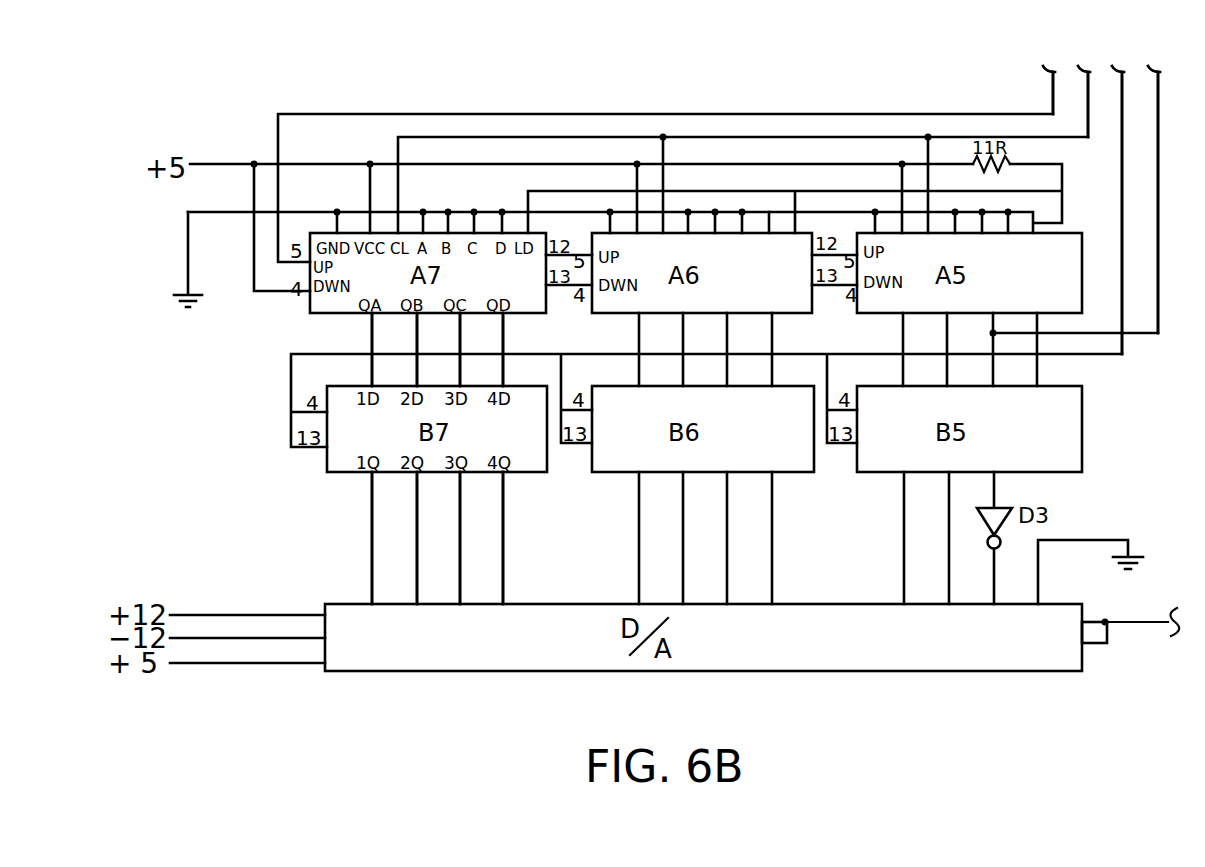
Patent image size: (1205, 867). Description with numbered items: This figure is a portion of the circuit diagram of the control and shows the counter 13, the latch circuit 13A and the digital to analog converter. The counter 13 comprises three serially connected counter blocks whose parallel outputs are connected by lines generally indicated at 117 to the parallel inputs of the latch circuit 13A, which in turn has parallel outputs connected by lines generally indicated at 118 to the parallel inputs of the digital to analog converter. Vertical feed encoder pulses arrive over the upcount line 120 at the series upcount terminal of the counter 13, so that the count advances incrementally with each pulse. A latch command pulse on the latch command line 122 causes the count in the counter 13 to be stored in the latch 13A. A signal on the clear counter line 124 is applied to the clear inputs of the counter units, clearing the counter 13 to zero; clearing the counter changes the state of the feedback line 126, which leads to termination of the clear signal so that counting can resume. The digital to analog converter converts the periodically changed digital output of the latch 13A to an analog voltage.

The counter 13 is at (823, 102).
The latch circuit 13A is at (896, 516).
The lines 117 is at (352, 340).
The lines 118 is at (358, 540).
The upcount line 120 is at (1053, 88).
The latch command line 122 is at (1122, 163).
The clear counter line 124 is at (1087, 96).
The feedback line 126 is at (1152, 333).